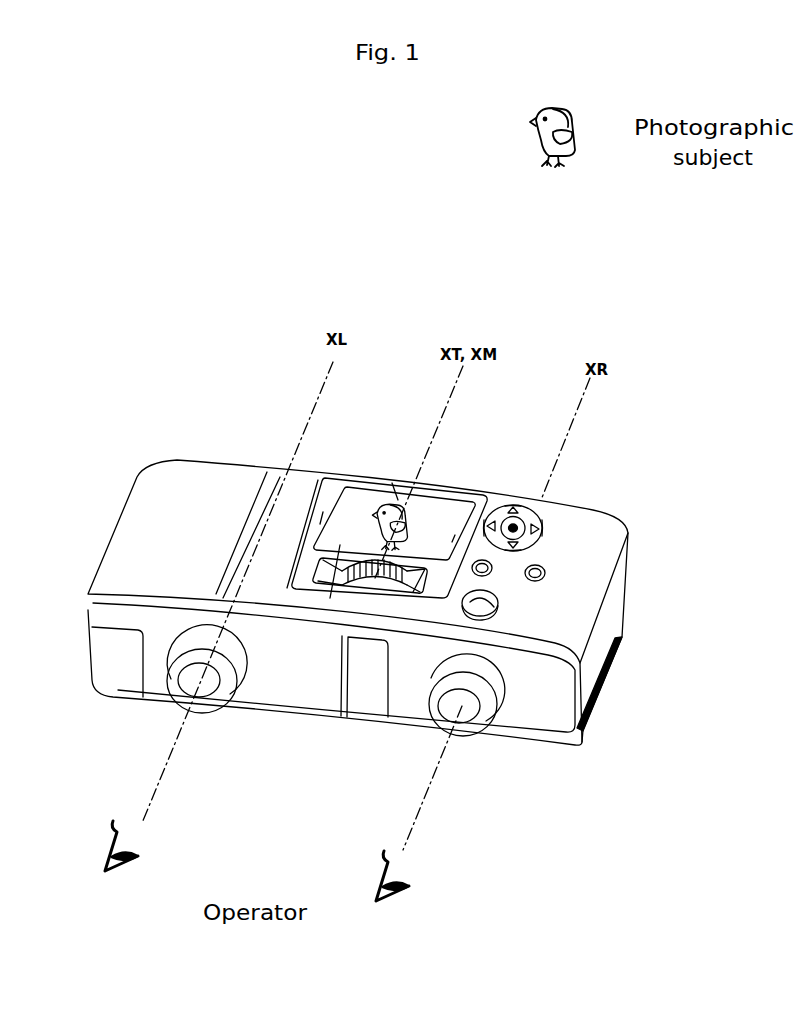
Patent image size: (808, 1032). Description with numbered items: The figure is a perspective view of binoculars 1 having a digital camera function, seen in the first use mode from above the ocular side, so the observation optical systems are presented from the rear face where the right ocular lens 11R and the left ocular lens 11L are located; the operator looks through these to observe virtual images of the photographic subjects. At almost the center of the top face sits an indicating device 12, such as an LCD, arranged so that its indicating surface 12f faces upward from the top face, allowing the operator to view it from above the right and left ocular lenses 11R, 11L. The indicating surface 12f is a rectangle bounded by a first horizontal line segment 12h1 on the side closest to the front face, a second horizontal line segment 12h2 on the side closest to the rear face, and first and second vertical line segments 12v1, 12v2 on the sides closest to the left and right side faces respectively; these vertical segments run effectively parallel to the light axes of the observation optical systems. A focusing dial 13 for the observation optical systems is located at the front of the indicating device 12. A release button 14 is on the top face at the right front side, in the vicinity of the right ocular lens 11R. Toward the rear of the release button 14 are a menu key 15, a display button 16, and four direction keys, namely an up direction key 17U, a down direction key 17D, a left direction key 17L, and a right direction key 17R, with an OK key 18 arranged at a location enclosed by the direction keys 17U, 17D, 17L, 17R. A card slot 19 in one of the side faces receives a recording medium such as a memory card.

The binoculars 1 is at (626, 528).
The left ocular lens 11L is at (229, 712).
The right ocular lens 11R is at (492, 736).
The indicating device 12 is at (352, 480).
The indicating surface 12f is at (420, 503).
The first horizontal line segment 12h1 is at (392, 483).
The second horizontal line segment 12h2 is at (340, 545).
The first vertical line segment 12v1 is at (323, 516).
The second vertical line segment 12v2 is at (452, 542).
The focusing dial 13 is at (353, 582).
The release button 14 is at (494, 609).
The menu key 15 is at (491, 572).
The display button 16 is at (546, 577).
The left direction key 17L is at (497, 513).
The up direction key 17U is at (527, 507).
The right direction key 17R is at (542, 528).
The down direction key 17D is at (522, 548).
The OK key 18 is at (518, 522).
The card slot 19 is at (597, 720).